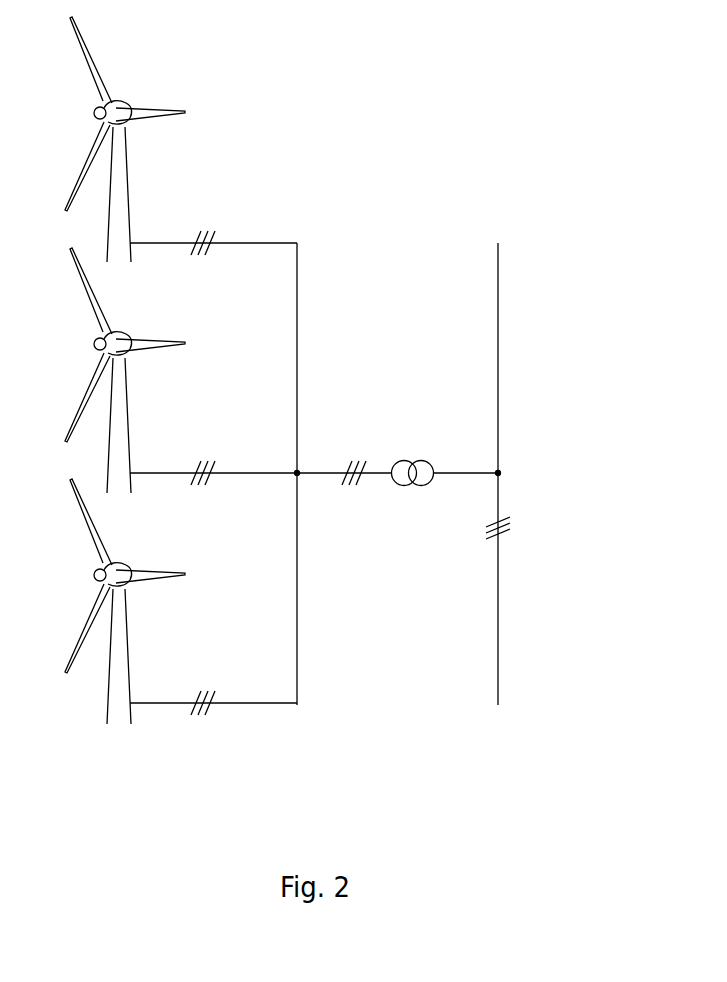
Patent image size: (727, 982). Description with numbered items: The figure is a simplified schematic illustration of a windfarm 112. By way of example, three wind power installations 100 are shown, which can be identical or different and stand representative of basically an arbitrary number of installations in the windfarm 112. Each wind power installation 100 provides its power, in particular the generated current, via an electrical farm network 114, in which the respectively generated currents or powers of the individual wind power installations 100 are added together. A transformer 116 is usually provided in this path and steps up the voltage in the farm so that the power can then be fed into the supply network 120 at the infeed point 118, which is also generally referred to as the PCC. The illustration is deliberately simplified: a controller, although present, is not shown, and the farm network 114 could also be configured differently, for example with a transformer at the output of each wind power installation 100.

The wind power installation 100 is at (122, 180).
The windfarm 112 is at (355, 113).
The electrical farm network 114 is at (313, 471).
The transformer 116 is at (417, 448).
The infeed point 118 is at (510, 453).
The supply network 120 is at (498, 266).